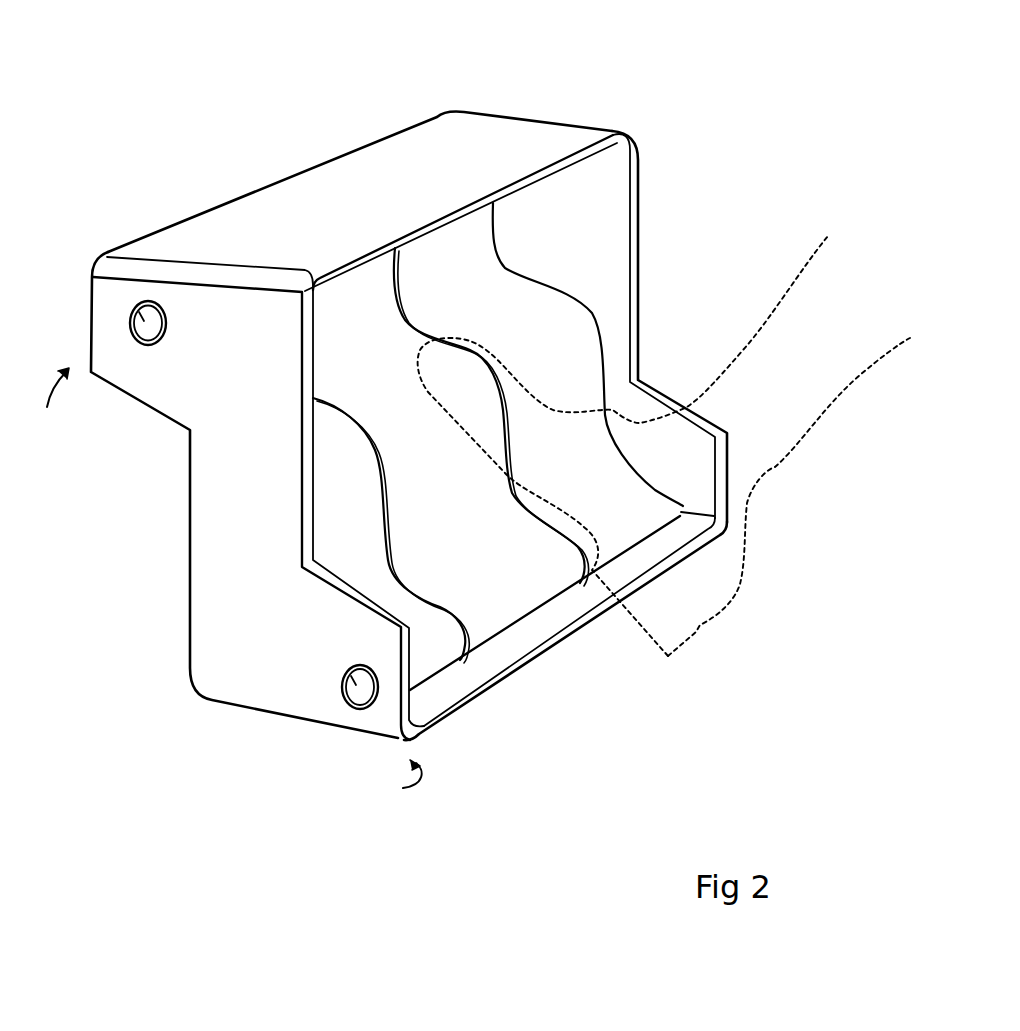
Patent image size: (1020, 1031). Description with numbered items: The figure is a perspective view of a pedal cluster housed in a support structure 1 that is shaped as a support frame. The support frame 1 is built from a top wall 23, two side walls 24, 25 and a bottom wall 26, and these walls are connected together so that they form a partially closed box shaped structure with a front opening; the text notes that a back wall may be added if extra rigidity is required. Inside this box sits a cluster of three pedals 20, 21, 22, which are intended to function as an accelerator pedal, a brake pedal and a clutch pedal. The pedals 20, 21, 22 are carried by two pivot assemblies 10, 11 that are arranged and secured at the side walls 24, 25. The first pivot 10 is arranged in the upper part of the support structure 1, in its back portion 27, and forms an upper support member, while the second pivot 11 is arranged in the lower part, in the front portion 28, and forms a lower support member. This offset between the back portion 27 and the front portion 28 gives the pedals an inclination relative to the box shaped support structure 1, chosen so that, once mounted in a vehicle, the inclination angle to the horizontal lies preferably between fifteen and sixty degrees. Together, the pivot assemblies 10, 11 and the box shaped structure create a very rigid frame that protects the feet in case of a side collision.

The support structure 1 is at (409, 382).
The first pivot 10 is at (130, 303).
The second pivot 11 is at (345, 668).
The pedal 20 is at (391, 530).
The pedal 21 is at (491, 417).
The pedal 22 is at (588, 354).
The top wall 23 is at (410, 135).
The side wall 24 is at (257, 496).
The side wall 25 is at (641, 247).
The bottom wall 26 is at (540, 663).
The back portion 27 is at (68, 405).
The front portion 28 is at (392, 783).